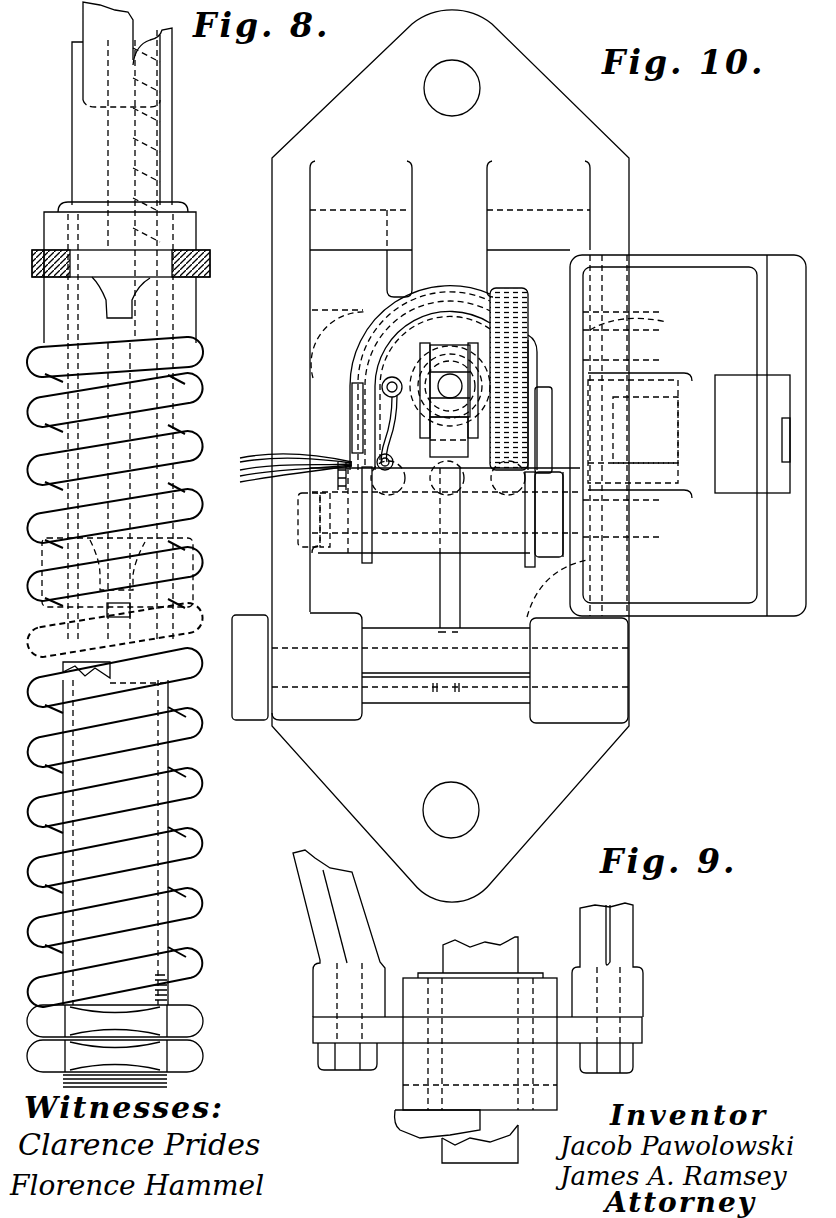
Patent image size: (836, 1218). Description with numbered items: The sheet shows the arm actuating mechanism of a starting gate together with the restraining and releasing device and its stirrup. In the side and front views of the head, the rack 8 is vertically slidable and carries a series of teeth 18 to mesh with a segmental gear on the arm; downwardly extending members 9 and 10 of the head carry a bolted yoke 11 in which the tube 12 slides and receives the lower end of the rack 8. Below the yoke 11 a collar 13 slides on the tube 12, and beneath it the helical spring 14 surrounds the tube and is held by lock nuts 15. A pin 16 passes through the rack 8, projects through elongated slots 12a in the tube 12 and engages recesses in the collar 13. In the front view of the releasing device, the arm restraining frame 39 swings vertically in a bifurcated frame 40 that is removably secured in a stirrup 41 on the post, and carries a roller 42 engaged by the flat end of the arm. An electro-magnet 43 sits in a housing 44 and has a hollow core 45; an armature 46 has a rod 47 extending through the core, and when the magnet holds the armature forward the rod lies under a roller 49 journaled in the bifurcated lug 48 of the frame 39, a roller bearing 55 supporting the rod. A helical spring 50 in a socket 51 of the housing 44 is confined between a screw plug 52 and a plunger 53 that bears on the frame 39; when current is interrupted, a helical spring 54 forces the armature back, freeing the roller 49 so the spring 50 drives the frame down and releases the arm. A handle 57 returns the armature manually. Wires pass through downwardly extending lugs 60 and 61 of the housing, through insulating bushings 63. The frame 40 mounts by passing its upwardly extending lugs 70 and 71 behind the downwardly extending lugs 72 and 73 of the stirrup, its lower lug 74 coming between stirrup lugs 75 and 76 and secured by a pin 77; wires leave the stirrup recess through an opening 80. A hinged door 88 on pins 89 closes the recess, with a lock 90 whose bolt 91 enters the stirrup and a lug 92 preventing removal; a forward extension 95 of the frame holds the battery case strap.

In FIG. 8, the rack 8 is at (90, 30).
In FIG. 9, the rack 8 is at (510, 960).
In FIG. 8, the downwardly extending member 9 is at (168, 137).
In FIG. 9, the downwardly extending member 9 is at (628, 942).
In FIG. 9, the downwardly extending member 10 is at (360, 937).
In FIG. 8, the yoke 11 is at (210, 267).
In FIG. 9, the yoke 11 is at (633, 1037).
In FIG. 8, the tube 12 is at (165, 425).
In FIG. 9, the tube 12 is at (462, 968).
In FIG. 8, the elongated slots 12a is at (122, 492).
In FIG. 8, the collar 13 is at (190, 325).
In FIG. 9, the collar 13 is at (407, 1093).
In FIG. 8, the helical spring 14 is at (192, 462).
In FIG. 9, the helical spring 14 is at (405, 1125).
In FIG. 8, the lock nuts 15 is at (193, 1022).
In FIG. 8, the pin 16 is at (123, 292).
In FIG. 9, the pin 16 is at (547, 1088).
In FIG. 8, the series of teeth 18 is at (150, 172).
In FIG. 10, the arm restraining frame 39 is at (357, 560).
In FIG. 10, the bifurcated frame 40 is at (352, 422).
In FIG. 10, the stirrup 41 is at (629, 170).
In FIG. 10, the roller 42 is at (477, 547).
In FIG. 10, the electro-magnet 43 is at (442, 356).
In FIG. 10, the housing 44 is at (383, 323).
In FIG. 10, the hollow core 45 is at (432, 345).
In FIG. 10, the armature 46 is at (422, 470).
In FIG. 10, the rod 47 is at (528, 350).
In FIG. 10, the lug 48 is at (452, 433).
In FIG. 10, the roller 49 is at (497, 303).
In FIG. 10, the helical spring 50 is at (500, 385).
In FIG. 10, the socket 51 is at (452, 385).
In FIG. 10, the screw plug 52 is at (480, 300).
In FIG. 10, the plunger 53 is at (523, 418).
In FIG. 10, the helical spring 54 is at (430, 370).
In FIG. 10, the roller bearing 55 is at (430, 405).
In FIG. 10, the handle 57 is at (460, 610).
In FIG. 10, the downwardly extending lug 60 is at (383, 492).
In FIG. 10, the downwardly extending lug 61 is at (517, 553).
In FIG. 10, the insulating bushings 63 is at (382, 382).
In FIG. 10, the upwardly extending lug 70 is at (392, 272).
In FIG. 10, the upwardly extending lug 71 is at (507, 267).
In FIG. 10, the downwardly extending lug 72 is at (327, 238).
In FIG. 10, the downwardly extending lug 73 is at (540, 233).
In FIG. 10, the lug 74 is at (402, 660).
In FIG. 10, the lug 75 is at (310, 708).
In FIG. 10, the lug 76 is at (567, 713).
In FIG. 10, the pin 77 is at (250, 713).
In FIG. 10, the opening 80 is at (663, 467).
In FIG. 10, the hinged door 88 is at (762, 343).
In FIG. 10, the pins 89 is at (617, 323).
In FIG. 10, the lock 90 is at (752, 434).
In FIG. 10, the bolt 91 is at (785, 440).
In FIG. 10, the lug 92 is at (613, 450).
In FIG. 10, the forward extension 95 is at (482, 700).